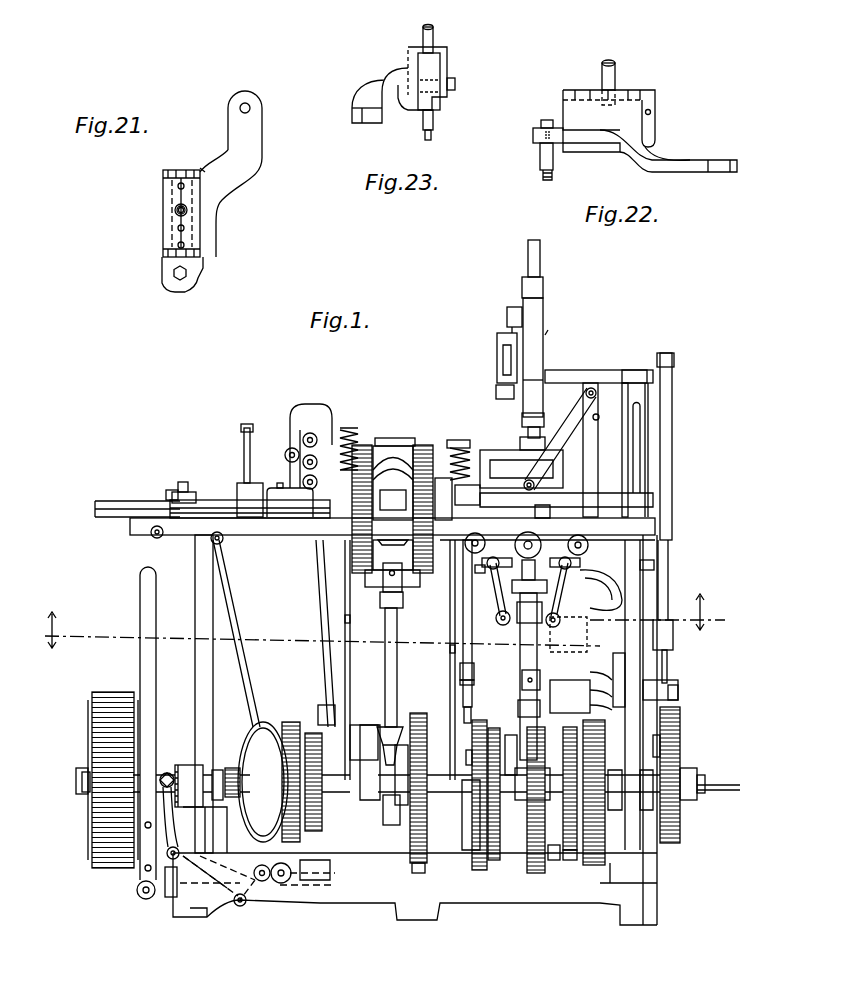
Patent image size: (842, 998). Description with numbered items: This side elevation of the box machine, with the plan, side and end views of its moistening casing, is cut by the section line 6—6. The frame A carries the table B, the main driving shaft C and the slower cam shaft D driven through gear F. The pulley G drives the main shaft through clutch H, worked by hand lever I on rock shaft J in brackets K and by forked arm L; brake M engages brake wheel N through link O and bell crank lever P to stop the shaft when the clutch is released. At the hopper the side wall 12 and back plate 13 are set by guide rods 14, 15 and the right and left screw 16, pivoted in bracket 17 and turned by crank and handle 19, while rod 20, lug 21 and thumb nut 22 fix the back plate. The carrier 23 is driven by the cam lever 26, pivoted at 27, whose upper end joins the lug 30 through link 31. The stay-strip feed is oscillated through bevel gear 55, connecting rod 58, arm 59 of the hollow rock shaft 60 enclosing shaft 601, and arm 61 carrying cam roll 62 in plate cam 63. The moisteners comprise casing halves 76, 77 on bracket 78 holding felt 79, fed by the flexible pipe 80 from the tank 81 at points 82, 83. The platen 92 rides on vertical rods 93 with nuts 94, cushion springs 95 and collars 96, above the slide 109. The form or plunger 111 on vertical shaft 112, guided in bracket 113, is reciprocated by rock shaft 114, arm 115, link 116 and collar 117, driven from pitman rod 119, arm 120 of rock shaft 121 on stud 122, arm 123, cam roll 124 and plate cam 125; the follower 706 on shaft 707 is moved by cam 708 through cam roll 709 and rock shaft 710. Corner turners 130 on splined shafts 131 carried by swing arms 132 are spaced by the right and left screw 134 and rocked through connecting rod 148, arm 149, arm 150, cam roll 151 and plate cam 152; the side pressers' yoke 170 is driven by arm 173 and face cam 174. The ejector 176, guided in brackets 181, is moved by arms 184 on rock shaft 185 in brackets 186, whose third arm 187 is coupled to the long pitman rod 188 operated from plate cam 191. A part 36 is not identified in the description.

In FIG. 21, the casing half 76 is at (163, 188).
In FIG. 23, the casing half 76 is at (453, 94).
In FIG. 22, the casing half 76 is at (548, 150).
In FIG. 21, the casing half 77 is at (206, 166).
In FIG. 23, the casing half 77 is at (400, 75).
In FIG. 22, the casing half 77 is at (590, 108).
In FIG. 21, the bracket 78 is at (252, 150).
In FIG. 23, the bracket 78 is at (352, 113).
In FIG. 22, the bracket 78 is at (700, 172).
In FIG. 23, the felt or wicking 79 is at (441, 68).
In FIG. 21, the flexible pipe 80 is at (176, 214).
In FIG. 23, the flexible pipe 80 is at (437, 32).
In FIG. 22, the flexible pipe 80 is at (618, 68).
In FIG. 1, the flexible pipe 80 is at (392, 452).
In FIG. 21, the attachment point 82 is at (186, 247).
In FIG. 21, the attachment point 83 is at (186, 228).
In FIG. 1, the section line 6 is at (372, 621).
In FIG. 1, the side wall 12 is at (297, 418).
In FIG. 1, the back plate 13 is at (245, 428).
In FIG. 1, the guide rod 14 is at (314, 434).
In FIG. 1, the guide rod 15 is at (397, 412).
In FIG. 1, the right and left screw 16 is at (315, 458).
In FIG. 1, the bracket 17 is at (290, 488).
In FIG. 1, the crank and handle 19 is at (290, 448).
In FIG. 1, the rod 20 is at (228, 490).
In FIG. 1, the lug 21 is at (176, 490).
In FIG. 1, the thumb nut 22 is at (184, 482).
In FIG. 1, the carrier or feeder 23 is at (115, 501).
In FIG. 1, the cam lever 26 is at (234, 632).
In FIG. 1, the pivot 27 is at (277, 884).
In FIG. 1, the lug 30 is at (150, 534).
In FIG. 1, the link 31 is at (192, 540).
In FIG. 1, the bracket 36 is at (390, 825).
In FIG. 1, the bevel gear 55 is at (393, 682).
In FIG. 1, the connecting rod 58 is at (318, 580).
In FIG. 1, the arm 59 is at (351, 706).
In FIG. 1, the rock shaft 60 is at (363, 725).
In FIG. 1, the arm 61 is at (398, 748).
In FIG. 1, the cam roll 62 is at (410, 822).
In FIG. 1, the plate cam 63 is at (418, 876).
In FIG. 1, the tank 81 is at (404, 445).
In FIG. 1, the platen 92 is at (440, 477).
In FIG. 1, the vertical rods 93 is at (343, 619).
In FIG. 1, the nuts 94 is at (462, 440).
In FIG. 1, the cushion springs 95 is at (463, 457).
In FIG. 1, the collars 96 is at (460, 484).
In FIG. 1, the slide 109 is at (386, 552).
In FIG. 1, the form or plunger 111 is at (503, 448).
In FIG. 1, the vertical shaft 112 is at (543, 268).
In FIG. 1, the bracket 113 is at (547, 332).
In FIG. 1, the rock shaft 114 is at (600, 378).
In FIG. 1, the arm 115 is at (502, 350).
In FIG. 1, the link 116 is at (513, 312).
In FIG. 1, the collar 117 is at (546, 316).
In FIG. 1, the pitman rod 119 is at (673, 437).
In FIG. 1, the arm 120 is at (673, 662).
In FIG. 1, the rock shaft 121 is at (669, 688).
In FIG. 1, the stud 122 is at (680, 697).
In FIG. 1, the arm 123 is at (682, 718).
In FIG. 1, the cam roll 124 is at (673, 739).
In FIG. 1, the plate cam 125 is at (684, 764).
In FIG. 1, the corner turner fingers 130 is at (490, 540).
In FIG. 1, the splined shafts 131 is at (658, 540).
In FIG. 1, the swing arms 132 is at (499, 565).
In FIG. 1, the right and left screw 134 is at (500, 582).
In FIG. 1, the connecting rod 148 is at (470, 637).
In FIG. 1, the arm 149 is at (470, 690).
In FIG. 1, the arm 150 is at (466, 757).
In FIG. 1, the cam roll 151 is at (491, 858).
In FIG. 1, the plate cam 152 is at (479, 878).
In FIG. 1, the yoke 170 is at (610, 598).
In FIG. 1, the arm 173 is at (508, 728).
In FIG. 1, the face cam 174 is at (540, 878).
In FIG. 1, the ejector 176 is at (558, 425).
In FIG. 1, the brackets 181 is at (530, 396).
In FIG. 1, the arms 184 is at (575, 425).
In FIG. 1, the rock shaft 185 is at (597, 416).
In FIG. 1, the brackets 186 is at (566, 448).
In FIG. 1, the third arm 187 is at (592, 388).
In FIG. 1, the pitman rod 188 is at (645, 430).
In FIG. 1, the plate cam 191 is at (570, 855).
In FIG. 1, the shaft 601 is at (320, 706).
In FIG. 1, the follower 706 is at (496, 572).
In FIG. 1, the shaft 707 is at (540, 640).
In FIG. 1, the cam 708 is at (556, 860).
In FIG. 1, the cam roll 709 is at (535, 800).
In FIG. 1, the rock shaft 710 is at (560, 686).
In FIG. 1, the frame A is at (194, 662).
In FIG. 1, the table B is at (287, 540).
In FIG. 1, the main driving shaft C is at (80, 779).
In FIG. 1, the cam shaft D is at (238, 765).
In FIG. 1, the gear F is at (568, 857).
In FIG. 1, the pulley G is at (100, 722).
In FIG. 1, the clutch H is at (166, 772).
In FIG. 1, the hand lever I is at (141, 612).
In FIG. 1, the rock shaft J is at (137, 892).
In FIG. 1, the brackets K is at (170, 897).
In FIG. 1, the forked arm L is at (163, 820).
In FIG. 1, the brake M is at (312, 735).
In FIG. 1, the brake wheel N is at (318, 740).
In FIG. 1, the link O is at (236, 905).
In FIG. 1, the bell crank lever P is at (306, 893).